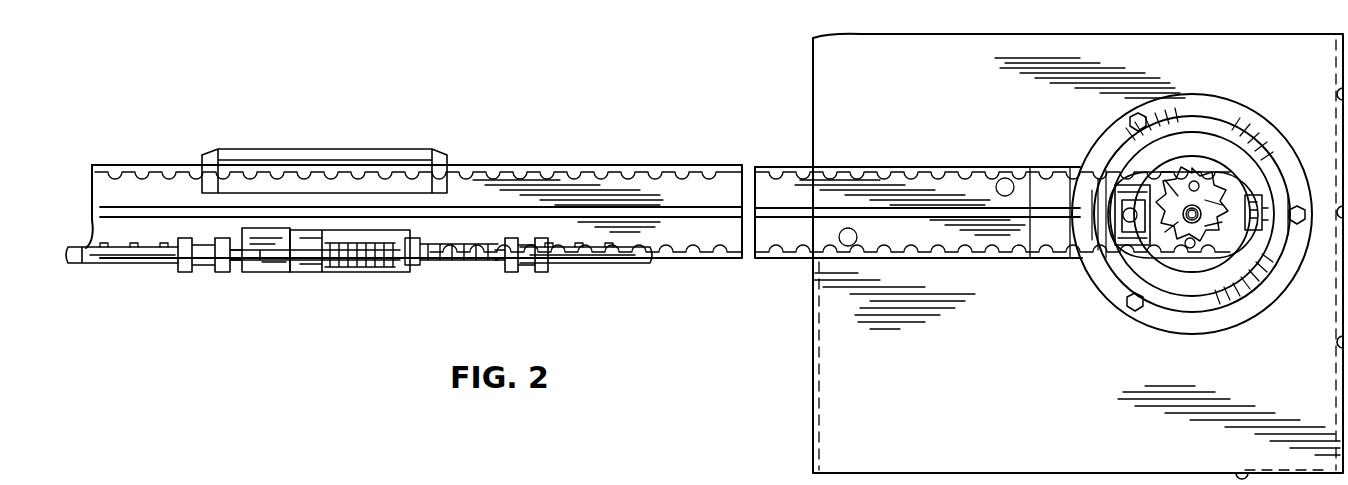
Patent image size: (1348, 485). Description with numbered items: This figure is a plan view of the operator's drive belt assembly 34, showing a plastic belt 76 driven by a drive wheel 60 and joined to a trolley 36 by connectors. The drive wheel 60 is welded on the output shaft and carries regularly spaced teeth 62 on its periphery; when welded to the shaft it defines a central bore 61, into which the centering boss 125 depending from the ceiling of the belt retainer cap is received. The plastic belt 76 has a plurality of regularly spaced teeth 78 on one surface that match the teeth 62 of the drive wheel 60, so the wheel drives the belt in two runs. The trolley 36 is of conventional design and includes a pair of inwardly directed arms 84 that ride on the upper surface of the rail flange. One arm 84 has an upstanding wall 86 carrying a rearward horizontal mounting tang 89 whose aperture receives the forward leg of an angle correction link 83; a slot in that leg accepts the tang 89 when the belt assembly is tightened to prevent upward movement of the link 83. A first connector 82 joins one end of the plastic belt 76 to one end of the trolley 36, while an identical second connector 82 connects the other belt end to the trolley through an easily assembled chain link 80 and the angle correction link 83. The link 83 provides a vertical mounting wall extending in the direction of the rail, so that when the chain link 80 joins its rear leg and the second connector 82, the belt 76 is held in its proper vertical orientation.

The drive belt assembly 34 is at (637, 165).
The connector 82 is at (142, 258).
The chain link 80 is at (204, 270).
The angle correction link 83 is at (268, 262).
The rearward horizontal mounting tang 89 is at (278, 264).
The trolley 36 is at (300, 270).
The upstanding wall 86 is at (312, 268).
The arms 84 is at (320, 265).
The plastic belt 76 is at (798, 262).
The teeth 78 is at (990, 258).
The drive wheel 60 is at (1118, 175).
The central bore 61 is at (1175, 245).
The teeth 62 is at (1240, 200).
The centering boss 125 is at (1192, 214).